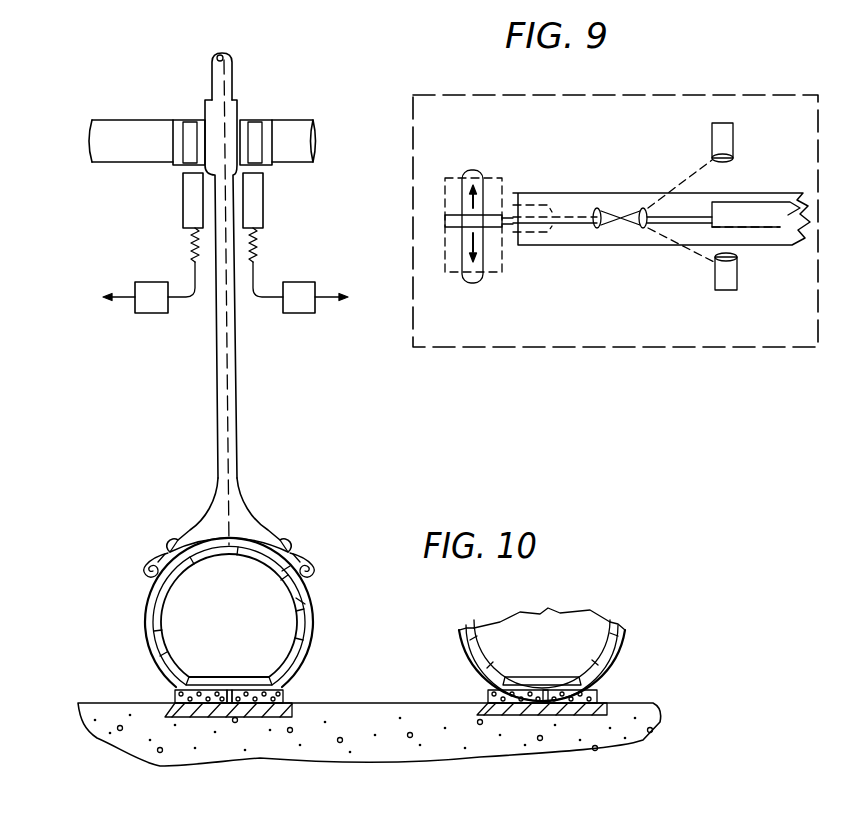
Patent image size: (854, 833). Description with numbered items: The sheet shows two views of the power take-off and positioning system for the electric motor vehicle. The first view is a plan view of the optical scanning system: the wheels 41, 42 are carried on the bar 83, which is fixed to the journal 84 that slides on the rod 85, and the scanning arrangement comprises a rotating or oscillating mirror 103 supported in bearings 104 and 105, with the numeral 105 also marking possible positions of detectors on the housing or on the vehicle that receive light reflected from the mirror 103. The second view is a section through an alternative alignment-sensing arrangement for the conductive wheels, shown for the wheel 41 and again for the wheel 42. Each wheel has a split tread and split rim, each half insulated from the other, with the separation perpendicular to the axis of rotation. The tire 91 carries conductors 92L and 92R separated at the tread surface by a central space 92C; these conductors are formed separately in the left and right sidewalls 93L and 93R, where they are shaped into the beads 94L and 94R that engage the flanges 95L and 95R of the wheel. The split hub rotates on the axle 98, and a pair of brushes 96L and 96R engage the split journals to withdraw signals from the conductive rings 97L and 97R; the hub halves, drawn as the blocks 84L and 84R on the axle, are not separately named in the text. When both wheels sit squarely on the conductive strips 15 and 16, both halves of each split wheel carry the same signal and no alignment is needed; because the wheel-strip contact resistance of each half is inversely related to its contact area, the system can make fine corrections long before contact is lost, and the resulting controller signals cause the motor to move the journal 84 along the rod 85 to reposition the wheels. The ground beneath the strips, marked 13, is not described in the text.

In FIG. 9, the journal 84 is at (462, 152).
In FIG. 9, the rod 85 is at (480, 170).
In FIG. 9, the bar 83 is at (747, 203).
In FIG. 9, the bearing 104 is at (596, 208).
In FIG. 9, the mirror 103 is at (603, 210).
In FIG. 9, the bearing 105 is at (724, 130).
In FIG. 10, the wheel 41 is at (290, 522).
In FIG. 10, the axle 98 is at (108, 134).
In FIG. 10, the left actuator block 84L is at (182, 72).
In FIG. 10, the right actuator block 84R is at (278, 114).
In FIG. 10, the left conductive ring 97L is at (190, 157).
In FIG. 10, the right conductive ring 97R is at (255, 153).
In FIG. 10, the left brush 96L is at (190, 207).
In FIG. 10, the right brush 96R is at (255, 210).
In FIG. 10, the left flange 95L is at (163, 548).
In FIG. 10, the right flange 95R is at (288, 552).
In FIG. 10, the left bead 94L is at (147, 562).
In FIG. 10, the right bead 94R is at (303, 563).
In FIG. 10, the left sidewall 93L is at (150, 600).
In FIG. 10, the right sidewall 93R is at (308, 600).
In FIG. 10, the tire 91 is at (317, 646).
In FIG. 10, the left conductor 92L is at (175, 692).
In FIG. 10, the right conductor 92R is at (283, 690).
In FIG. 10, the central space 92C is at (227, 688).
In FIG. 10, the conductive strip 16 is at (231, 720).
In FIG. 10, the ground 13 is at (386, 703).
In FIG. 10, the wheel 42 is at (633, 607).
In FIG. 10, the conductive strip 15 is at (547, 718).